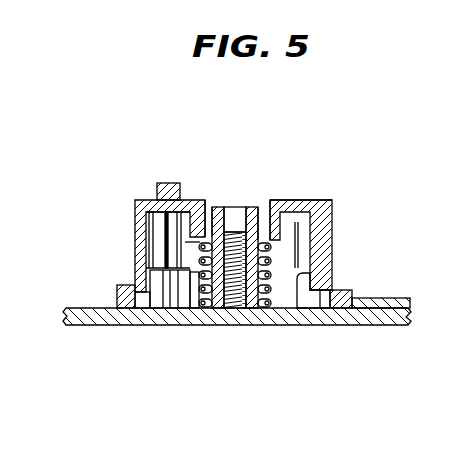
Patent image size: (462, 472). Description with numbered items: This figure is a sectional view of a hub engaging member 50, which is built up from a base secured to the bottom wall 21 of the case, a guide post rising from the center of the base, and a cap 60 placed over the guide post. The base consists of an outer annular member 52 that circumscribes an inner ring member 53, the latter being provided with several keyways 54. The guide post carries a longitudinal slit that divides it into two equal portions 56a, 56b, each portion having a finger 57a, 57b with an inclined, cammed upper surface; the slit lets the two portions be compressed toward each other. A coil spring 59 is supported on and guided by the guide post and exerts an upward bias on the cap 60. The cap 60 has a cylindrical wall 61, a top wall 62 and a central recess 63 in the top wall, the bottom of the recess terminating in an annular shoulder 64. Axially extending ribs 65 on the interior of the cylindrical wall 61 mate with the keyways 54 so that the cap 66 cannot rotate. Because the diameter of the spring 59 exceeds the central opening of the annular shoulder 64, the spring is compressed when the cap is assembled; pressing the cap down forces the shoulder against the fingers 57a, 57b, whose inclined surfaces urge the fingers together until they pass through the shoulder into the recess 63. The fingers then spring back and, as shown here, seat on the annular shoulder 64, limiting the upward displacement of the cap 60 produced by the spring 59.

The bottom wall 21 is at (93, 323).
The hub engaging member 50 is at (255, 257).
The outer annular member 52 is at (352, 299).
The inner ring member 53 is at (328, 268).
The keyways 54 is at (162, 306).
The guide post portion 56a is at (200, 258).
The guide post portion 56b is at (271, 255).
The finger 57a is at (221, 213).
The finger 57b is at (262, 210).
The coil spring 59 is at (191, 308).
The cap 60 is at (333, 222).
The cylindrical wall 61 is at (140, 236).
The top wall 62 is at (303, 201).
The central recess 63 is at (213, 210).
The annular shoulder 64 is at (232, 222).
The ribs 65 is at (150, 222).
The cap 66 is at (159, 187).